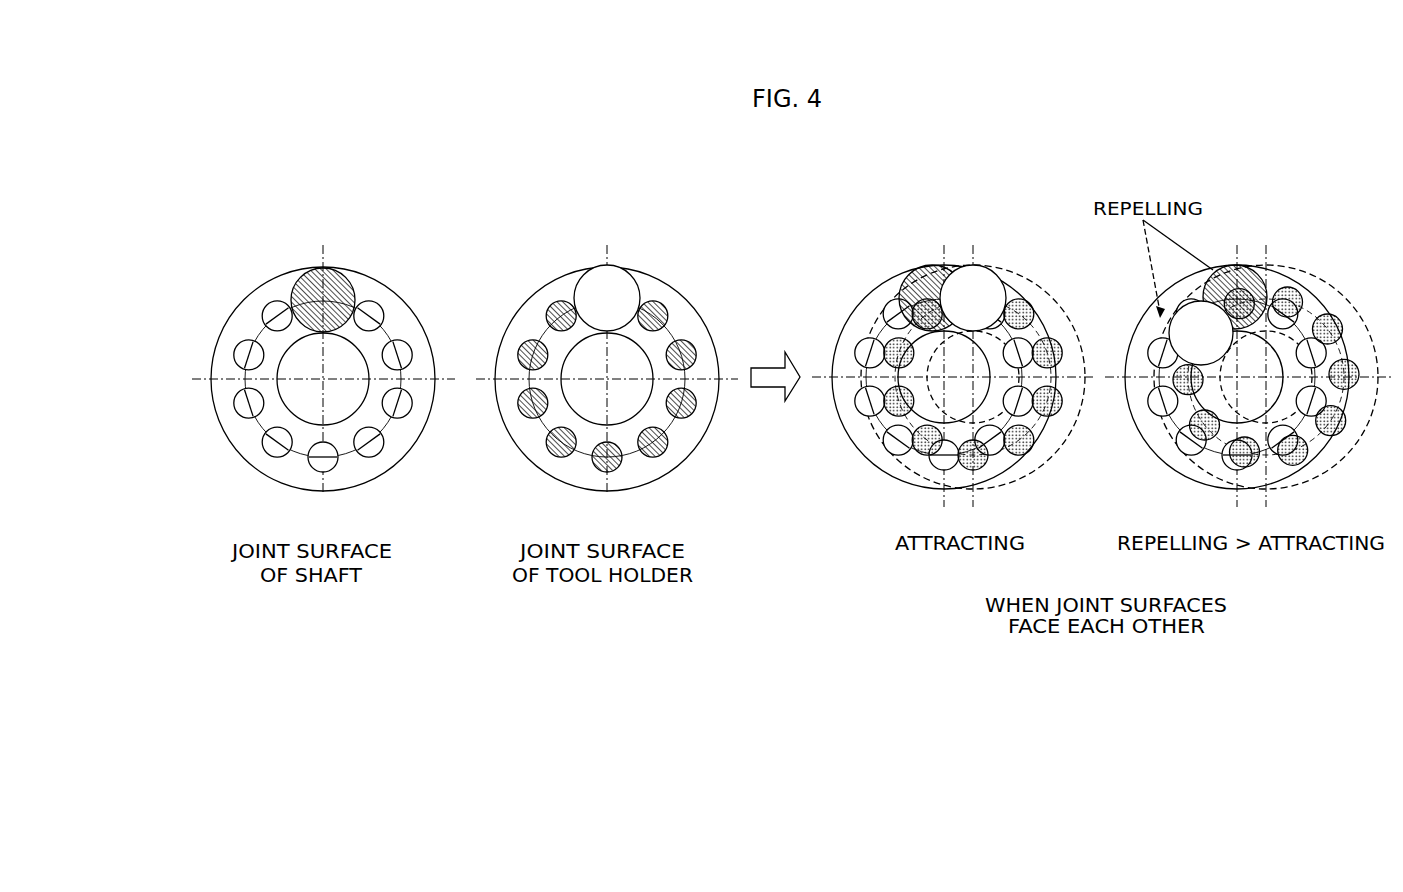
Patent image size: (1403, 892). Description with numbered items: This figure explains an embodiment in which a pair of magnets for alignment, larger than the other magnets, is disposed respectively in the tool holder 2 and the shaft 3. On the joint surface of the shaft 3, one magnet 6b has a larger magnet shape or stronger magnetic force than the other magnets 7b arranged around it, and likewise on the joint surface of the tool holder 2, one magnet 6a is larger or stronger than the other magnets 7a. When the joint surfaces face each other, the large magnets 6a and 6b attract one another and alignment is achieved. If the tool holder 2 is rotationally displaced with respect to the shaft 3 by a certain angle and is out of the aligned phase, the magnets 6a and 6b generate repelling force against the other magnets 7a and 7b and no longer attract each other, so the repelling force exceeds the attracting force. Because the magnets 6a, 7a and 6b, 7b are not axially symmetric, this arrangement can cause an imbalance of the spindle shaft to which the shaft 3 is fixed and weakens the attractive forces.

The tool holder 2 is at (544, 286).
The shaft 3 is at (251, 293).
The magnet 6a is at (580, 279).
The magnet 6b is at (298, 279).
The other magnets 7a is at (522, 415).
The other magnets 7b is at (238, 415).